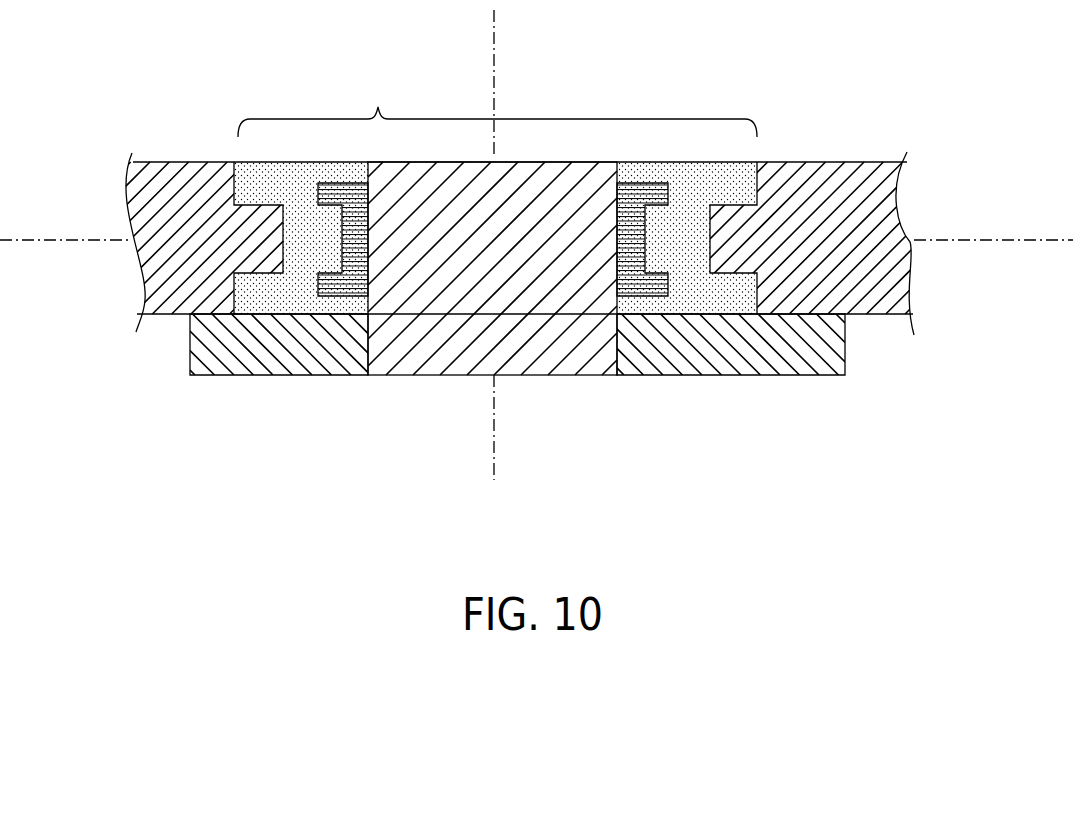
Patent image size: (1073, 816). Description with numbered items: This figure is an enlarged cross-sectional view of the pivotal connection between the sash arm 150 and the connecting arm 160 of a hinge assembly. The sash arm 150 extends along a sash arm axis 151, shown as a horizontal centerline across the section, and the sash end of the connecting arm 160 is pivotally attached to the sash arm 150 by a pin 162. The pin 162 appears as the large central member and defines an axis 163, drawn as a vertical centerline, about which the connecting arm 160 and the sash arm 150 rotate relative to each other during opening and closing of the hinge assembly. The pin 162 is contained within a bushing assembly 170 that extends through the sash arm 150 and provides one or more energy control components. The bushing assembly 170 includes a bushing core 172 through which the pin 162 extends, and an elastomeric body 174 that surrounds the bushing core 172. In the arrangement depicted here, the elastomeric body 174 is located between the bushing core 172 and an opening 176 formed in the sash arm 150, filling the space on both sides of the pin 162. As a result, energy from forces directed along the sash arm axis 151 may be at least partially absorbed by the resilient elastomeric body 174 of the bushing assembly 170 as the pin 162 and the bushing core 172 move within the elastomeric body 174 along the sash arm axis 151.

The sash arm 150 is at (854, 177).
The sash arm axis 151 is at (62, 238).
The connecting arm 160 is at (817, 375).
The pin 162 is at (577, 347).
The axis 163 is at (493, 53).
The bushing assembly 170 is at (497, 104).
The bushing core 172 is at (345, 287).
The elastomeric body 174 is at (750, 175).
The opening 176 is at (240, 180).